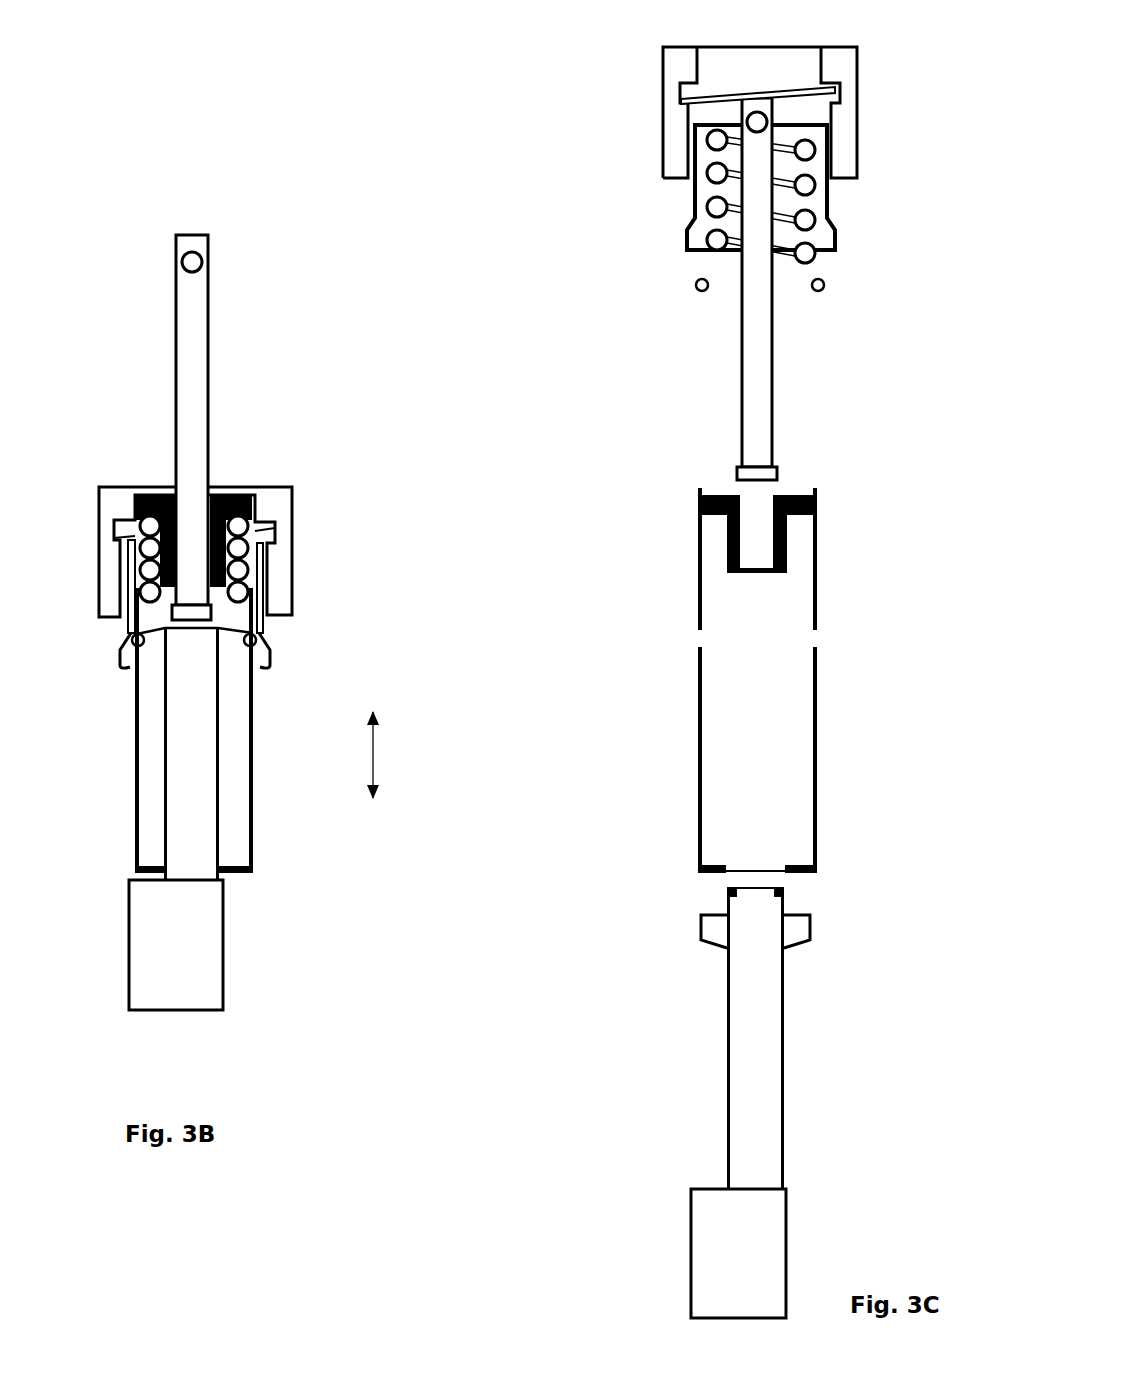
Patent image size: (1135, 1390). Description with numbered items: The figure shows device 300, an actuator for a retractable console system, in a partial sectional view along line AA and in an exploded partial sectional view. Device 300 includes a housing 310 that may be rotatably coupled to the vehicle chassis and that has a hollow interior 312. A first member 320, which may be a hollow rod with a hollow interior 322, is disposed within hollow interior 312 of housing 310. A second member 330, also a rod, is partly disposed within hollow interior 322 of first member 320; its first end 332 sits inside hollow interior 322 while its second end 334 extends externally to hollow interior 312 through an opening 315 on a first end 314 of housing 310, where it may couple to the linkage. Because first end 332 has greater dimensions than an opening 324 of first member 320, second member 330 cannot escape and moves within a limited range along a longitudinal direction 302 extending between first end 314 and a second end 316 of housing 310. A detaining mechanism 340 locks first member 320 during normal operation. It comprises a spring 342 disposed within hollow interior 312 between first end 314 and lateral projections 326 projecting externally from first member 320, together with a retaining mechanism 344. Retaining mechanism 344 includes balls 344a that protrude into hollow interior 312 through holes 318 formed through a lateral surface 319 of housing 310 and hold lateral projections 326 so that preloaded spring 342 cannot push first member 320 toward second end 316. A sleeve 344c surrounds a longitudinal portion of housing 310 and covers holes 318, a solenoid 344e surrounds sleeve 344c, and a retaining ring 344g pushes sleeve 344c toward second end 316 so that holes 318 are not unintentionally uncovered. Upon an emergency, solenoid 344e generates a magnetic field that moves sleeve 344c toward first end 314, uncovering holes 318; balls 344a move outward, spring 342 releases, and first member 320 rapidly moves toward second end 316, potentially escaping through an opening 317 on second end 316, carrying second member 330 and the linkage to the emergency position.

In FIG. 3B, the device 300 is at (77, 121).
In FIG. 3C, the device 300 is at (547, 44).
In FIG. 3B, the longitudinal direction 302 is at (377, 760).
In FIG. 3B, the housing 310 is at (253, 783).
In FIG. 3C, the housing 310 is at (680, 712).
In FIG. 3B, the hollow interior 312 is at (233, 755).
In FIG. 3C, the hollow interior 312 is at (757, 718).
In FIG. 3B, the first end 314 is at (236, 495).
In FIG. 3C, the first end 314 is at (805, 493).
In FIG. 3C, the opening 315 is at (757, 555).
In FIG. 3B, the second end 316 is at (247, 877).
In FIG. 3C, the second end 316 is at (803, 875).
In FIG. 3C, the opening 317 is at (752, 855).
In FIG. 3C, the holes 318 is at (820, 640).
In FIG. 3C, the lateral surface 319 is at (818, 727).
In FIG. 3B, the first member 320 is at (162, 745).
In FIG. 3C, the first member 320 is at (786, 1133).
In FIG. 3B, the hollow interior 322 is at (186, 770).
In FIG. 3C, the hollow interior 322 is at (757, 1087).
In FIG. 3C, the opening 324 is at (755, 902).
In FIG. 3B, the lateral projections 326 is at (156, 640).
In FIG. 3C, the lateral projections 326 is at (797, 937).
In FIG. 3B, the second member 330 is at (203, 401).
In FIG. 3C, the second member 330 is at (770, 355).
In FIG. 3B, the first end 332 is at (192, 600).
In FIG. 3C, the first end 332 is at (778, 473).
In FIG. 3B, the second end 334 is at (205, 258).
In FIG. 3B, the detaining mechanism 340 is at (76, 487).
In FIG. 3C, the detaining mechanism 340 is at (863, 105).
In FIG. 3B, the spring 342 is at (150, 548).
In FIG. 3C, the spring 342 is at (800, 220).
In FIG. 3B, the retaining mechanism 344 is at (380, 637).
In FIG. 3C, the retaining mechanism 344 is at (597, 95).
In FIG. 3B, the balls 344a is at (255, 637).
In FIG. 3C, the balls 344a is at (693, 285).
In FIG. 3B, the sleeve 344c is at (262, 600).
In FIG. 3C, the sleeve 344c is at (693, 197).
In FIG. 3B, the solenoid 344e is at (275, 556).
In FIG. 3C, the solenoid 344e is at (670, 143).
In FIG. 3B, the retaining ring 344g is at (255, 532).
In FIG. 3C, the retaining ring 344g is at (727, 93).